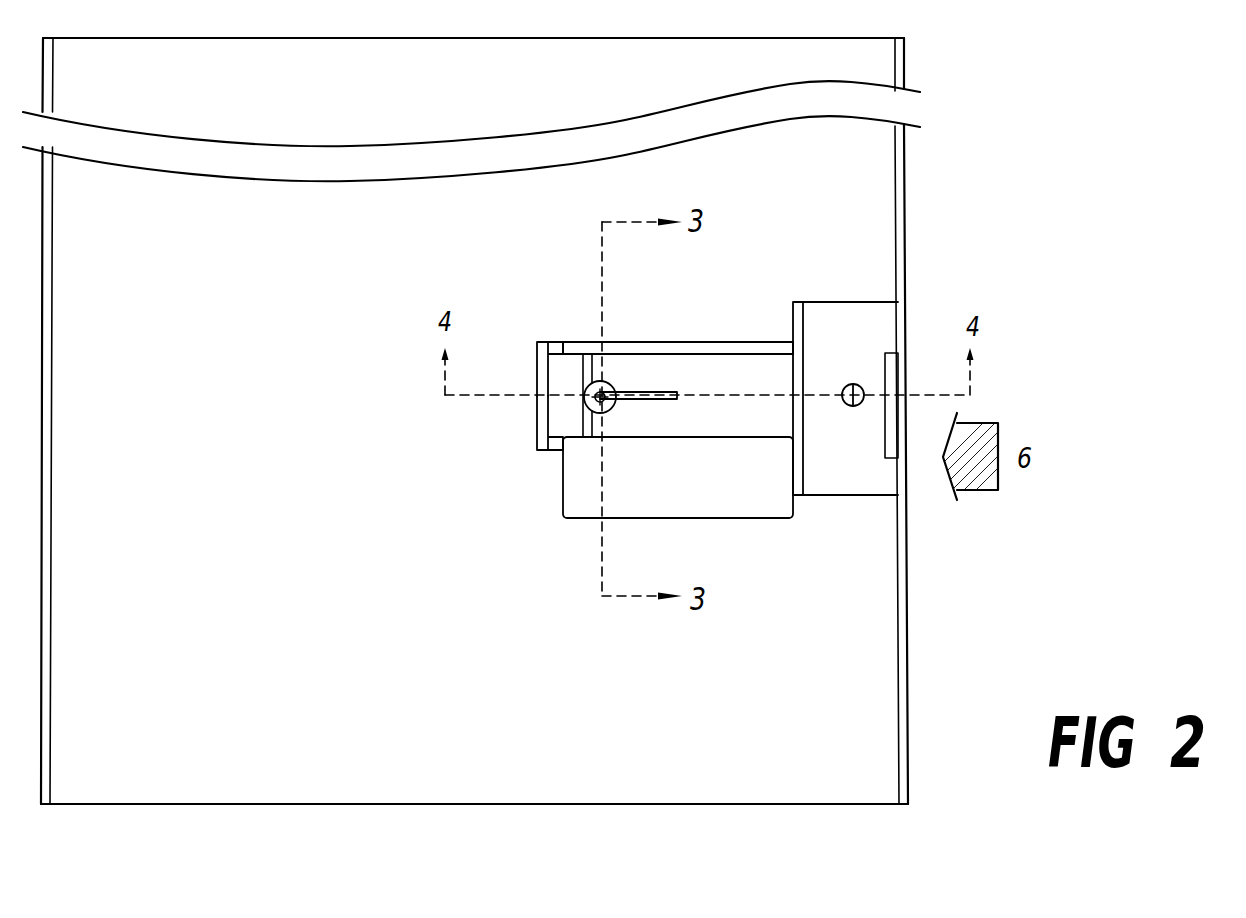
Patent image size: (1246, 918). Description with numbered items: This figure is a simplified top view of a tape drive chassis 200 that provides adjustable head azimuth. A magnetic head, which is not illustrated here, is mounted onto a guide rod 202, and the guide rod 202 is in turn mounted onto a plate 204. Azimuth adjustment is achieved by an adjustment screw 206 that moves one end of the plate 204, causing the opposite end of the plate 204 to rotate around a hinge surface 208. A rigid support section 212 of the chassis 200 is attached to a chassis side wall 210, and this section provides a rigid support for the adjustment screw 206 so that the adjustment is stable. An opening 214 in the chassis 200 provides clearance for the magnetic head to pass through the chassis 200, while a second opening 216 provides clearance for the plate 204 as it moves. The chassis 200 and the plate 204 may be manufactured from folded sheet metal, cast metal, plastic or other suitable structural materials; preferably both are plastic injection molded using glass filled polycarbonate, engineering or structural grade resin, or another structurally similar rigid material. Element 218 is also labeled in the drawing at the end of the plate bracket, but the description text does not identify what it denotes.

The tape drive chassis 200 is at (886, 805).
The guide rod 202 is at (607, 392).
The plate 204 is at (705, 352).
The adjustment screw 206 is at (849, 385).
The hinge surface 208 is at (551, 452).
The chassis side wall 210 is at (905, 530).
The rigid support section 212 is at (846, 495).
The opening 214 is at (722, 519).
The opening 216 is at (776, 341).
The end bracket 218 is at (544, 340).